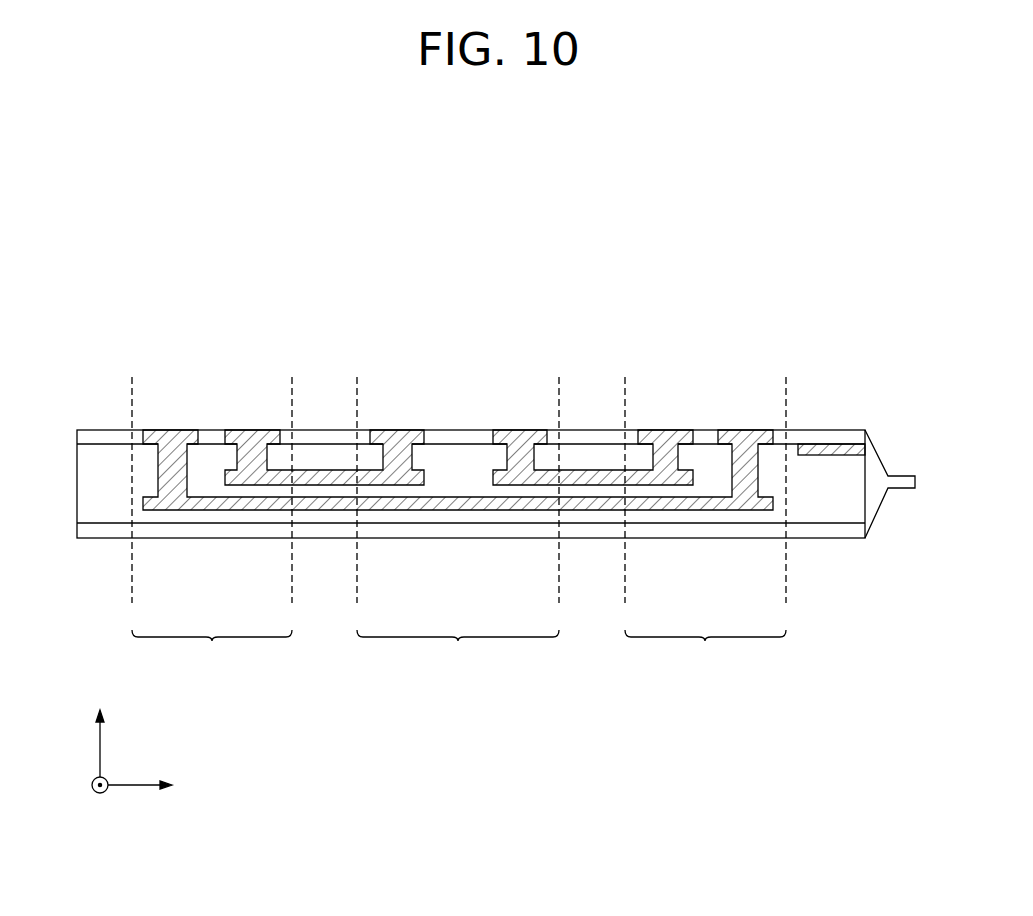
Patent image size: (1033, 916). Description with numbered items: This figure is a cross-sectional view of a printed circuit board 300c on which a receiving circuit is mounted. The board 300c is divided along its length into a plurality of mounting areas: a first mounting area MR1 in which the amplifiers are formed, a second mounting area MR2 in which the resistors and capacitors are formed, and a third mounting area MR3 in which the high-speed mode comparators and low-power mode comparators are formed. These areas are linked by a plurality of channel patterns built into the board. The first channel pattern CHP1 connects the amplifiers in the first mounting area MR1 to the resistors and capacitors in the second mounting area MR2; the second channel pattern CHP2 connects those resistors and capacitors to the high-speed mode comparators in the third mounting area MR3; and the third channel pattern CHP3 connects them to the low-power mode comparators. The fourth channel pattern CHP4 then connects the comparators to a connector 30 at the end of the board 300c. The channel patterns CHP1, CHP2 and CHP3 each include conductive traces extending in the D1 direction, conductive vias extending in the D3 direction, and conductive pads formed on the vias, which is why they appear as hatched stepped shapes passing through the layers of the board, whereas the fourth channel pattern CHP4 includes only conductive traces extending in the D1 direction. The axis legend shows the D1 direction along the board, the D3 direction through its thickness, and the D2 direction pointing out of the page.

The printed circuit board 300c is at (528, 255).
The first channel pattern CHP1 is at (247, 428).
The second channel pattern CHP2 is at (664, 428).
The third channel pattern CHP3 is at (457, 498).
The fourth channel pattern CHP4 is at (830, 444).
The connector 30 is at (893, 476).
The first mounting area MR1 is at (212, 524).
The second mounting area MR2 is at (458, 524).
The third mounting area MR3 is at (705, 524).
The D1 direction D1 is at (156, 785).
The D2 direction D2 is at (82, 785).
The D3 direction D3 is at (99, 729).